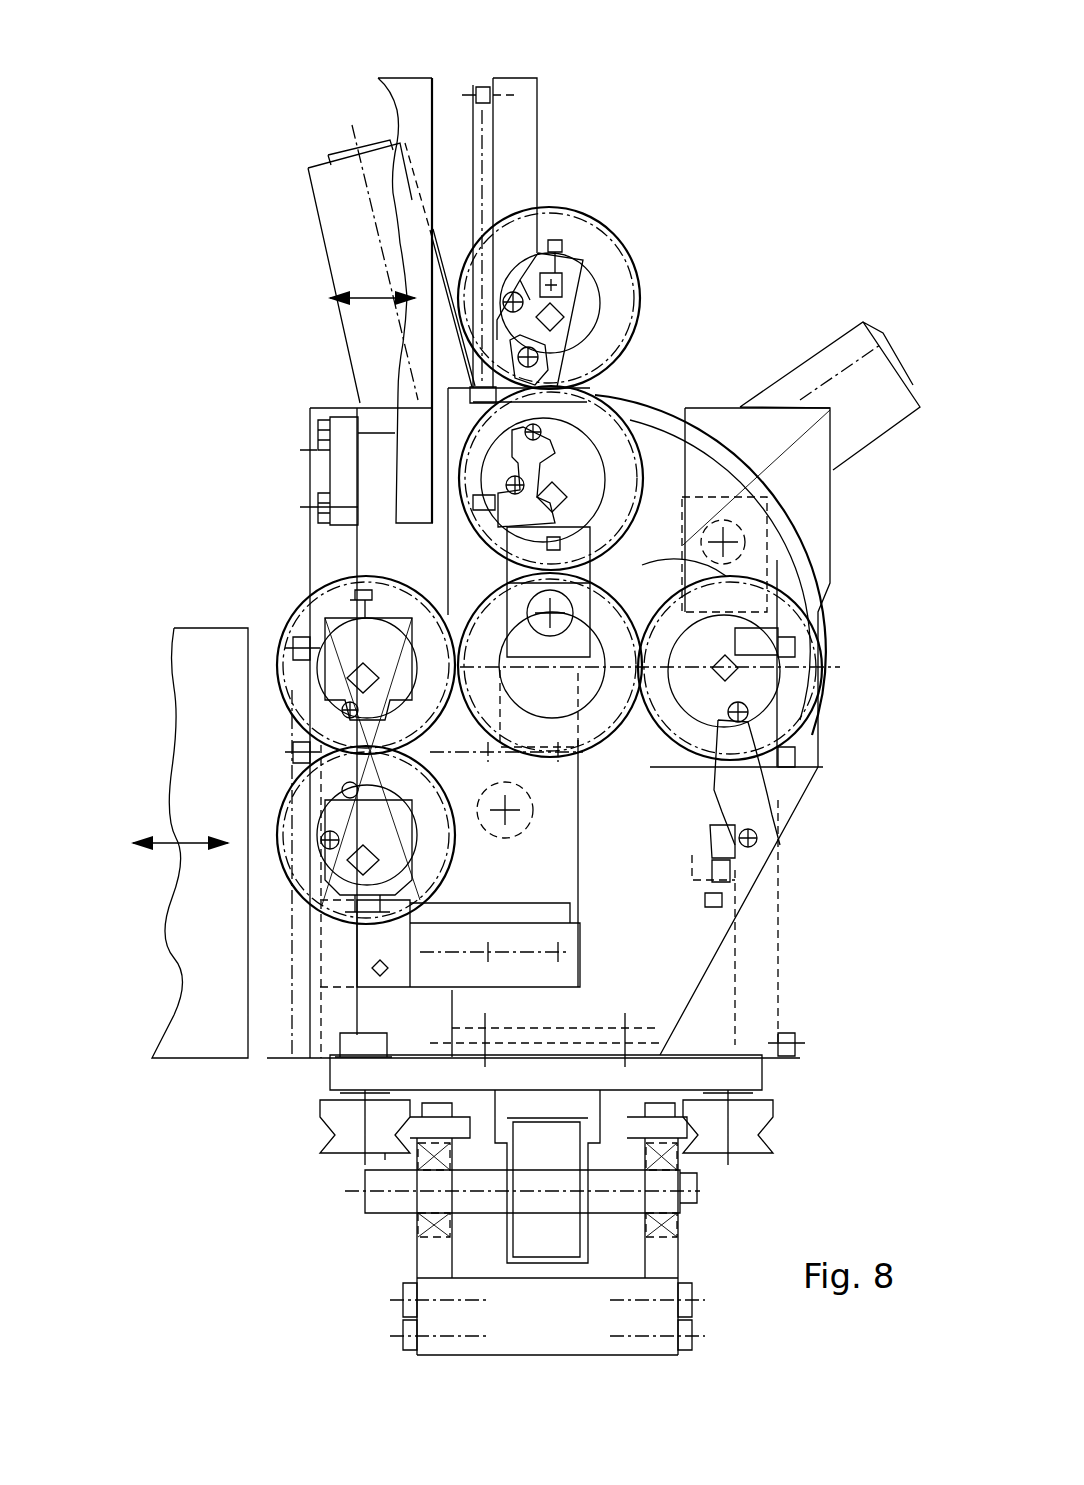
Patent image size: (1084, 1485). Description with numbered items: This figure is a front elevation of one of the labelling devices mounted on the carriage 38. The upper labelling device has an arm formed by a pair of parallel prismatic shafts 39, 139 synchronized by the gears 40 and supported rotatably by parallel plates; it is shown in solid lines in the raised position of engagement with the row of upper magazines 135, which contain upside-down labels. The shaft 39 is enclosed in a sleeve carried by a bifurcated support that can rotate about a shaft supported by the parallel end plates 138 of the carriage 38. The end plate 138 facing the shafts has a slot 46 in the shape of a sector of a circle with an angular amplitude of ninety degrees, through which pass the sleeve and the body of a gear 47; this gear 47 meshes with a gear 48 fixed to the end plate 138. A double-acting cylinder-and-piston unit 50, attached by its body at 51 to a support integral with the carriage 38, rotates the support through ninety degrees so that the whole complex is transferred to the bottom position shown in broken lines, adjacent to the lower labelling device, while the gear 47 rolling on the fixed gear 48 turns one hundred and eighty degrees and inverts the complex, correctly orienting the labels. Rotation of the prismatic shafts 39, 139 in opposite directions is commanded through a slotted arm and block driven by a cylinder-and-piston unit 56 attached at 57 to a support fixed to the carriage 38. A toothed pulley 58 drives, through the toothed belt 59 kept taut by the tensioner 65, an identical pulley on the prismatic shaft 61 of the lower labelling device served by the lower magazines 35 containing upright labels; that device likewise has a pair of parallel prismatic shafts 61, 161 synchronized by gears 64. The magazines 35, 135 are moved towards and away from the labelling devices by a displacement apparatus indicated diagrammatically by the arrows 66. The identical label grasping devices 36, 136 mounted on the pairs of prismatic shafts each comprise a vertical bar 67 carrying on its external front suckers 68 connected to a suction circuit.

The lower magazines 35 is at (262, 621).
The label grasping device 36 is at (310, 1062).
The carriage 38 is at (765, 1133).
The prismatic shaft 39 is at (553, 482).
The gears 40 is at (640, 300).
The slot 46 is at (643, 570).
The gear 47 is at (560, 425).
The gear 48 is at (495, 600).
The double-acting cylinder-and-piston unit 50 is at (328, 170).
The attachment point of cylinder body 51 is at (430, 455).
The cylinder-and-piston unit 56 is at (868, 330).
The attachment point of cylinder unit 57 is at (776, 457).
The toothed pulley 58 is at (555, 715).
The toothed belt 59 is at (555, 785).
The prismatic shaft 61 is at (373, 670).
The gears 64 is at (287, 796).
The belt tensioner 65 is at (510, 815).
The arrows indicating displacement apparatus 66 is at (368, 300).
The vertical bar 67 is at (531, 163).
The suckers 68 is at (480, 85).
The upper magazines 135 is at (458, 80).
The label grasping device 136 is at (553, 78).
The end plates 138 is at (795, 555).
The prismatic shaft 139 is at (553, 310).
The prismatic shaft 161 is at (380, 845).